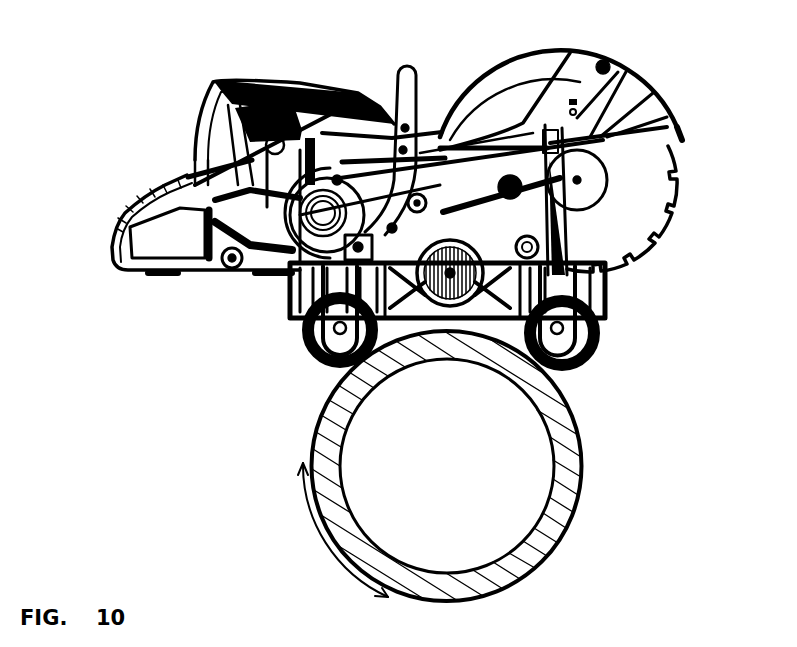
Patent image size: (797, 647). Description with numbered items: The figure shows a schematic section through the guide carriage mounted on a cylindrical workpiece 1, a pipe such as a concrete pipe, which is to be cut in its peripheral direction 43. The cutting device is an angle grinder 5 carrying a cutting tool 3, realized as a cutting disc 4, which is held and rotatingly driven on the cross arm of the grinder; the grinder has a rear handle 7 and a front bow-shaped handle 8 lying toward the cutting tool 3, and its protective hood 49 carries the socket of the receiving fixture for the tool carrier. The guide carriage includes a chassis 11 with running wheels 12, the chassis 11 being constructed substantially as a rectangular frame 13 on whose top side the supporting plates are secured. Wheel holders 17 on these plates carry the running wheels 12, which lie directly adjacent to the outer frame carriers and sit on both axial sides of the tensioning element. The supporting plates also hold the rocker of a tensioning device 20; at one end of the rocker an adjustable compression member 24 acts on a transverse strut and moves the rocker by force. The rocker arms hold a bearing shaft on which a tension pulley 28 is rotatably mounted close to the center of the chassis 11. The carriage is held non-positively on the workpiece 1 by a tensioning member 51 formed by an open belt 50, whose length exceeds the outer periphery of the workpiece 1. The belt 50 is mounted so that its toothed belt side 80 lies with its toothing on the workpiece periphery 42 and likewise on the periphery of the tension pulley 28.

The cylindrical workpiece 1 is at (557, 547).
The cutting tool 3 is at (695, 163).
The cutting disc 4 is at (647, 203).
The angle grinder 5 is at (340, 122).
The rear handle 7 is at (125, 272).
The front bow-shaped handle 8 is at (405, 78).
The chassis 11 is at (297, 292).
The running wheels 12 is at (317, 337).
The rectangular frame 13 is at (479, 316).
The wheel holders 17 is at (325, 310).
The tensioning device 20 is at (448, 218).
The compression member 24 is at (607, 229).
The tension pulley 28 is at (435, 312).
The workpiece periphery 42 is at (587, 524).
The peripheral direction 43 is at (315, 520).
The protective hood 49 is at (643, 93).
The belt 50 is at (575, 495).
The tensioning member 51 is at (528, 595).
The toothed belt side 80 is at (562, 454).